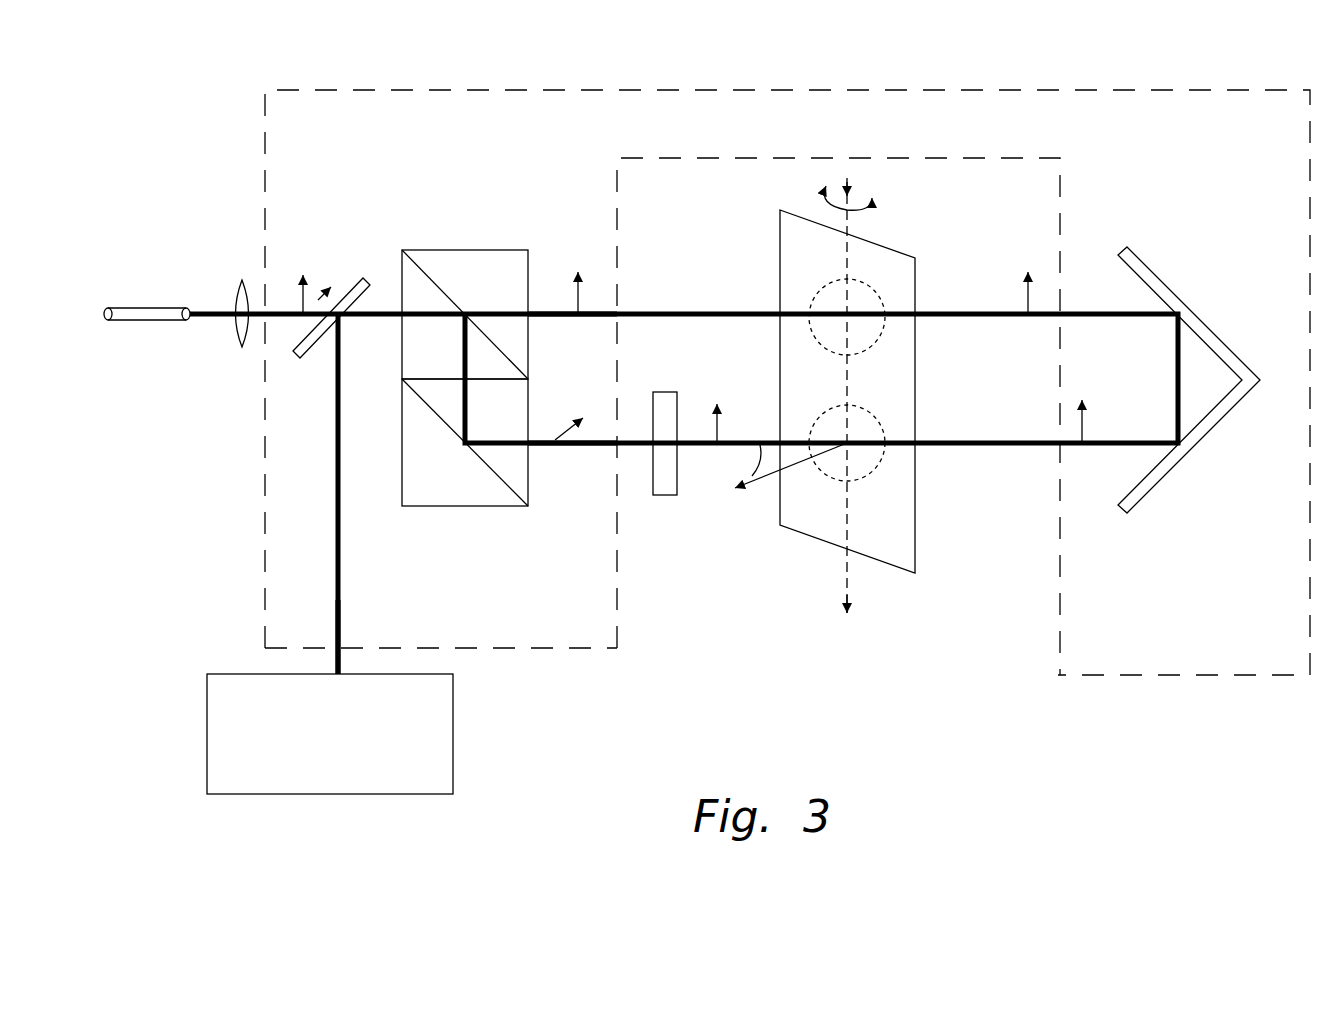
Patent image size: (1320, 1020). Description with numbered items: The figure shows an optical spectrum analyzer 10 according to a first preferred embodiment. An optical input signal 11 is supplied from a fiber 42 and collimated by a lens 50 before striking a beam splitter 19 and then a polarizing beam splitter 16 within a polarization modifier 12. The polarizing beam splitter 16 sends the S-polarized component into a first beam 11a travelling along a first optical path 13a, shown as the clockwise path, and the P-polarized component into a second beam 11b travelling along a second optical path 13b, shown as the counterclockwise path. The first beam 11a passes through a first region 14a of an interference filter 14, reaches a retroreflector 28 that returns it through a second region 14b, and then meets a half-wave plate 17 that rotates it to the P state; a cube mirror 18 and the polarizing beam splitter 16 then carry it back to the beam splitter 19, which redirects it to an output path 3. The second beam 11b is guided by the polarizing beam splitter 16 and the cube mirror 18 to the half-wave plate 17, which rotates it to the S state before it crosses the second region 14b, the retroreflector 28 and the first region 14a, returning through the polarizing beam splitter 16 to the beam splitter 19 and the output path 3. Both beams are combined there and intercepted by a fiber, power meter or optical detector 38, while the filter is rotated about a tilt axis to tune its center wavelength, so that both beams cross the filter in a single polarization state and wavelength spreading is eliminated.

The output path 3 is at (336, 624).
The optical spectrum analyzer 10 is at (1130, 742).
The optical input signal 11 is at (289, 296).
The first beam 11a is at (549, 312).
The second beam 11b is at (540, 448).
The polarization modifier 12 is at (1220, 90).
The first optical path 13a is at (382, 303).
The second optical path 13b is at (452, 368).
The interference filter 14 is at (780, 230).
The first region 14a is at (866, 289).
The second region 14b is at (873, 478).
The polarizing beam splitter 16 is at (424, 272).
The half-wave plate 17 is at (665, 482).
The cube mirror 18 is at (433, 420).
The beam splitter 19 is at (303, 348).
The retroreflector 28 is at (1195, 322).
The fiber, power meter or optical detector 38 is at (453, 708).
The fiber 42 is at (143, 313).
The lens 50 is at (238, 345).